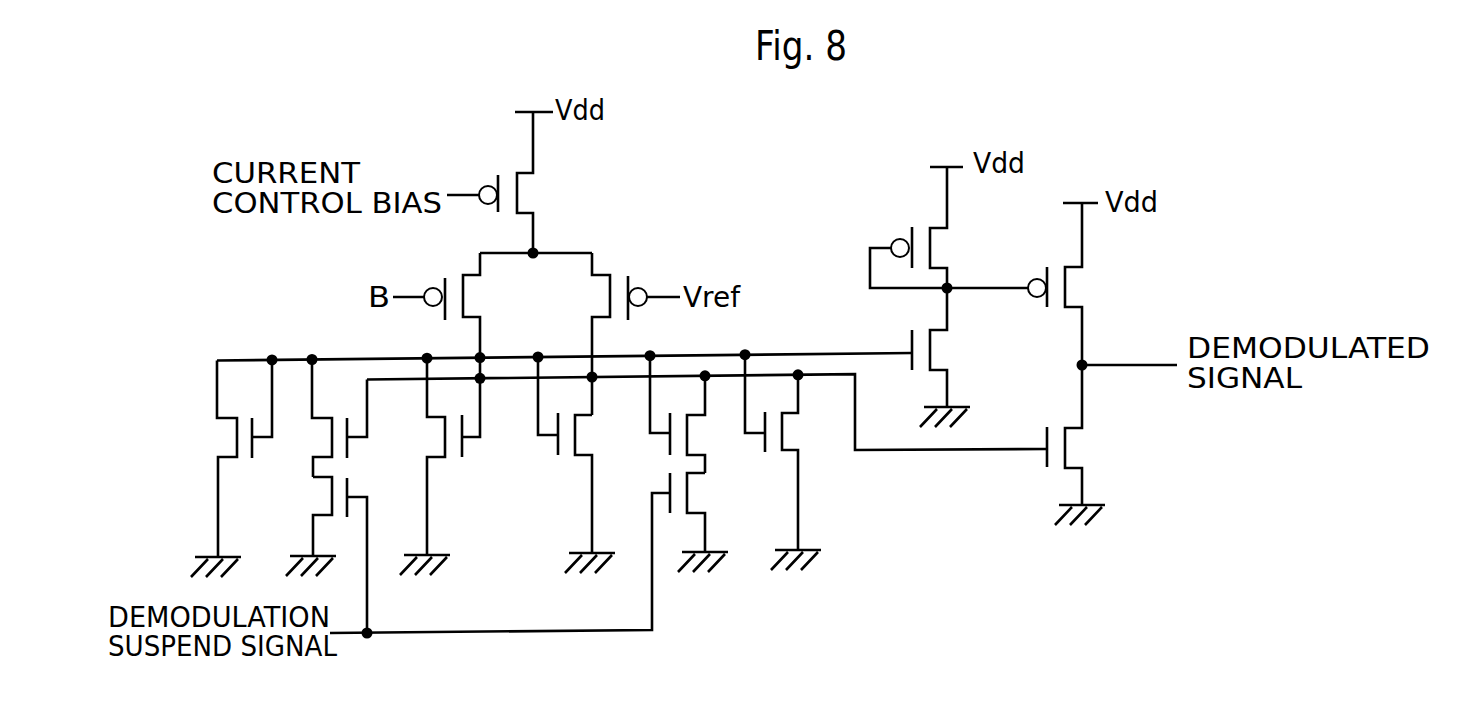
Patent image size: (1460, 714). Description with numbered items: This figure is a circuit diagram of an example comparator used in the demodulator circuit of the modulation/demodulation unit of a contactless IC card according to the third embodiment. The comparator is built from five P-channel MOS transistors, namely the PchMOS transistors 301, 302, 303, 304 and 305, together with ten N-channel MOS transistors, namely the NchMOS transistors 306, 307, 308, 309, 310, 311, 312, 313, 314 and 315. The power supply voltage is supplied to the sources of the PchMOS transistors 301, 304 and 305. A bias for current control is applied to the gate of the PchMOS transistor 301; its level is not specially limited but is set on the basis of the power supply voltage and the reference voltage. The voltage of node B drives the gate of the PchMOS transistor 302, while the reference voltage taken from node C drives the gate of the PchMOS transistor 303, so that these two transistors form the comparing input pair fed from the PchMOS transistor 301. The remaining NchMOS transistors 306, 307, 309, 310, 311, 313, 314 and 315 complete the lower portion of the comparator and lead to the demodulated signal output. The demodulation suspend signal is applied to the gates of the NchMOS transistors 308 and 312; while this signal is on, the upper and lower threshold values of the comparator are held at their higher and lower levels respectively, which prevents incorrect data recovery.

The PchMOS transistor 301 is at (522, 197).
The PchMOS transistor 302 is at (433, 278).
The PchMOS transistor 303 is at (633, 272).
The PchMOS transistor 304 is at (903, 228).
The PchMOS transistor 305 is at (1040, 307).
The NchMOS transistor 306 is at (223, 443).
The NchMOS transistor 307 is at (318, 435).
The NchMOS transistor 308 is at (362, 483).
The NchMOS transistor 309 is at (470, 447).
The NchMOS transistor 310 is at (552, 447).
The NchMOS transistor 311 is at (662, 445).
The NchMOS transistor 312 is at (705, 488).
The NchMOS transistor 313 is at (795, 437).
The NchMOS transistor 314 is at (900, 342).
The NchMOS transistor 315 is at (1080, 453).